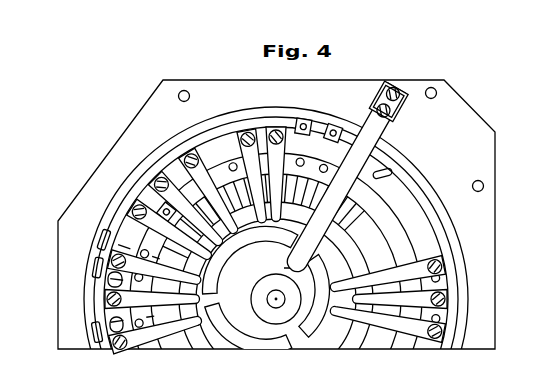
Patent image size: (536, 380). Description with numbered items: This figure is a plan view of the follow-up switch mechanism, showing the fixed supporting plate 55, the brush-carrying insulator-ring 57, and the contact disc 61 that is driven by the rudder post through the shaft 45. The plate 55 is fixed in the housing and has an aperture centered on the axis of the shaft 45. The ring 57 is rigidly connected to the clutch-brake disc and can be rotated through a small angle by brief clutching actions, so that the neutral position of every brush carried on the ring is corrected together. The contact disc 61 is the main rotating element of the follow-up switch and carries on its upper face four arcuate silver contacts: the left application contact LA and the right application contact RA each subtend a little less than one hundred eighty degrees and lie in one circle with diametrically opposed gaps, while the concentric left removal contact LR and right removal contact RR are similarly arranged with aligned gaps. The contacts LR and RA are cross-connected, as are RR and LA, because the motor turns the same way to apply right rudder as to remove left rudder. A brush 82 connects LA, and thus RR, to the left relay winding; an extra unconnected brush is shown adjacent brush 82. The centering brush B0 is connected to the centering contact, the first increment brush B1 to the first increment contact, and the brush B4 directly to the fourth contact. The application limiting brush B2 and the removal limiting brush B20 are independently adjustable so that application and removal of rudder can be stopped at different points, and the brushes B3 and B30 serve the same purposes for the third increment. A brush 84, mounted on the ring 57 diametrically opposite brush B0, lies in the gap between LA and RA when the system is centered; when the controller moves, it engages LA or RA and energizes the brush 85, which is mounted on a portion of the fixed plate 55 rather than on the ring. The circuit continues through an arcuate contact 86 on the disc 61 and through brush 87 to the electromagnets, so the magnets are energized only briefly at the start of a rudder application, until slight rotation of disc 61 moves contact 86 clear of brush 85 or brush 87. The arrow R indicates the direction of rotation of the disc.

The plate 55 is at (483, 156).
The insulator-ring 57 is at (393, 172).
The brush 82 is at (276, 127).
The brush 84 is at (442, 291).
The brush 85 is at (367, 120).
The arcuate contact 86 is at (282, 263).
The brush 87 is at (301, 348).
The shaft 45 is at (273, 304).
The contact disc 61 is at (268, 344).
The centering brush B0 is at (103, 302).
The first increment brush B1 is at (104, 257).
The application limiting brush B2 is at (135, 203).
The brush B3 is at (158, 174).
The brush B4 is at (190, 152).
The removal limiting brush B20 is at (410, 328).
The brush B30 is at (345, 350).
The left application contact LA is at (243, 220).
The left removal contact LR is at (290, 231).
The right application contact RA is at (213, 347).
The right removal contact RR is at (232, 347).
The rotation direction R is at (245, 298).